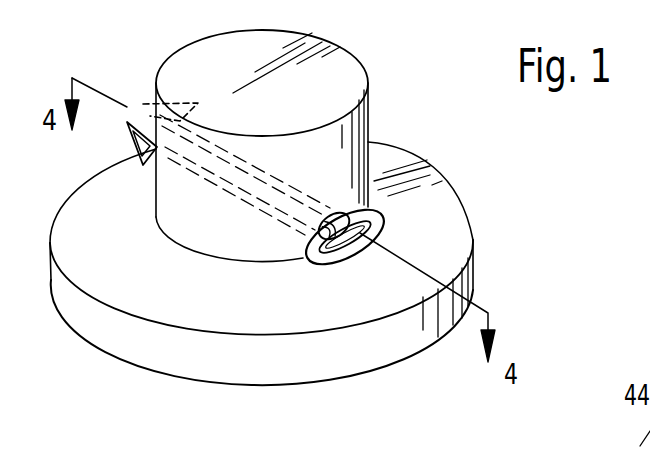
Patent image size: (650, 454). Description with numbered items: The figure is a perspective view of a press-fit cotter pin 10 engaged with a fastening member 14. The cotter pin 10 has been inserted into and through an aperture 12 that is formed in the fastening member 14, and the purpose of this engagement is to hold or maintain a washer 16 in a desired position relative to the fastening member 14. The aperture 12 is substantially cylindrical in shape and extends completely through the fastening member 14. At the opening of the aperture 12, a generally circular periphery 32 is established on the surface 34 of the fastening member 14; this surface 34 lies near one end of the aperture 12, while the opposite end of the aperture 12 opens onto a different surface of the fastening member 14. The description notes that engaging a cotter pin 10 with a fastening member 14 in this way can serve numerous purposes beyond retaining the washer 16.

The press-fit cotter pin 10 is at (276, 217).
The aperture 12 is at (357, 210).
The fastening member 14 is at (343, 50).
The washer 16 is at (118, 340).
The circular periphery 32 is at (303, 268).
The surface 34 is at (297, 240).